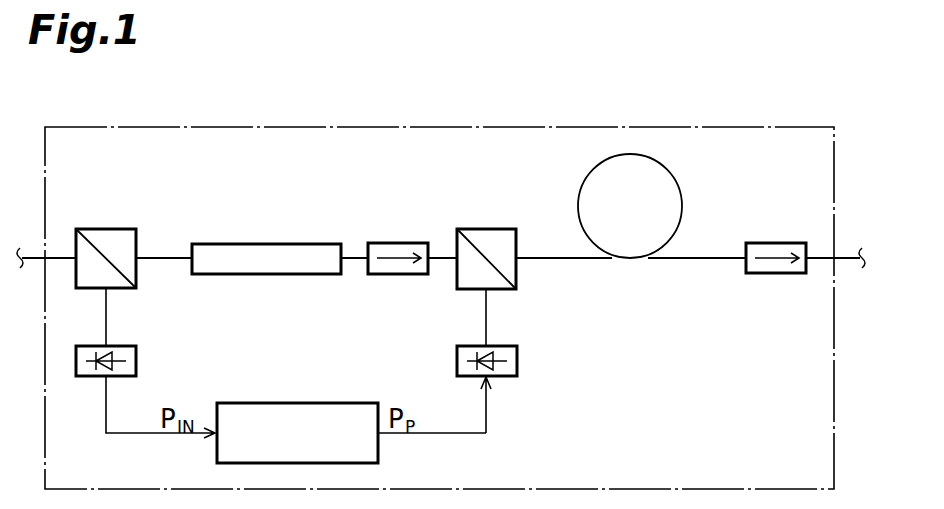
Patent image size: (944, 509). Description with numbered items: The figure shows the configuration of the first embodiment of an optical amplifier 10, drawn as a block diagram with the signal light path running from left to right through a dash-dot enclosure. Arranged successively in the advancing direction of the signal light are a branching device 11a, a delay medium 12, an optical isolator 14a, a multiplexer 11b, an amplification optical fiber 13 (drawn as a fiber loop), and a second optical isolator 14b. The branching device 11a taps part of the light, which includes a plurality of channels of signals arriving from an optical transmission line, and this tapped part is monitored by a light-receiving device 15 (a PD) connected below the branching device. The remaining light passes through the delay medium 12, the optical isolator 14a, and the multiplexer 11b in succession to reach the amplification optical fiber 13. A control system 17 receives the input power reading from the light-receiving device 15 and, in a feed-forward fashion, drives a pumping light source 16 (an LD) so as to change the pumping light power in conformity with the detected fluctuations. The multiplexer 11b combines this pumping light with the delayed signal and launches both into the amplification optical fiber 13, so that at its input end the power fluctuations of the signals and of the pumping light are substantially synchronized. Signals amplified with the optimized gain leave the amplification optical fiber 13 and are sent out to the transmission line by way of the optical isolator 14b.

The optical amplifier 10 is at (801, 125).
The branching device 11a is at (104, 228).
The multiplexer 11b is at (487, 229).
The delay medium 12 is at (272, 244).
The amplification optical fiber 13 is at (678, 178).
The optical isolator 14a is at (399, 243).
The optical isolator 14b is at (779, 243).
The light-receiving device 15 is at (137, 361).
The pumping light source 16 is at (517, 361).
The control system 17 is at (298, 403).